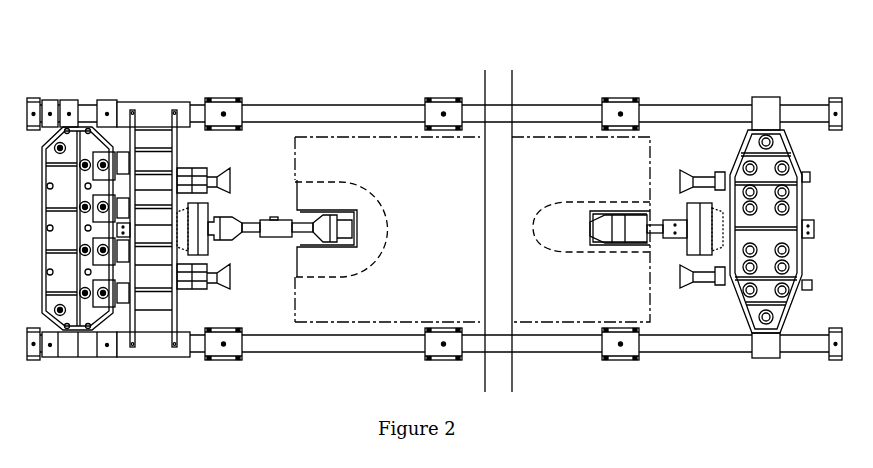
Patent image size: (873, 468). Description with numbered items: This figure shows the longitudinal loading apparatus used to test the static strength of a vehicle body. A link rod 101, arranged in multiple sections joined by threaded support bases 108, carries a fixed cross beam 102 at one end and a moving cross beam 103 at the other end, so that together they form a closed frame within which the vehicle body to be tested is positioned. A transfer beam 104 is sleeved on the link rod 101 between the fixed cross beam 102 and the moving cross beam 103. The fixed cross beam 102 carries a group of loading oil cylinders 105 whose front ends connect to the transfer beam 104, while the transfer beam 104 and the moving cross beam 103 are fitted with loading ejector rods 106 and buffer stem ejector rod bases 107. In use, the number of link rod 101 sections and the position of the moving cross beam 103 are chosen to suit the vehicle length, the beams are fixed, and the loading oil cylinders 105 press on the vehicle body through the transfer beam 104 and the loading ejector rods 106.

The link rod 101 is at (285, 116).
The fixed cross beam 102 is at (70, 152).
The moving cross beam 103 is at (752, 143).
The transfer beam 104 is at (148, 142).
The loading oil cylinders 105 is at (118, 155).
The loading ejector rod 106 is at (300, 228).
The buffer stem ejector rod base 107 is at (212, 176).
The threaded support base 108 is at (448, 110).